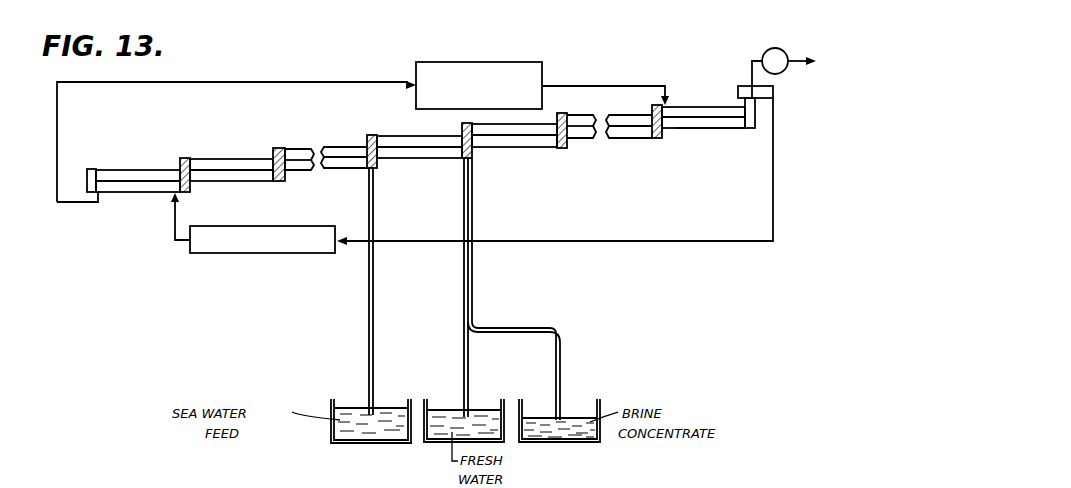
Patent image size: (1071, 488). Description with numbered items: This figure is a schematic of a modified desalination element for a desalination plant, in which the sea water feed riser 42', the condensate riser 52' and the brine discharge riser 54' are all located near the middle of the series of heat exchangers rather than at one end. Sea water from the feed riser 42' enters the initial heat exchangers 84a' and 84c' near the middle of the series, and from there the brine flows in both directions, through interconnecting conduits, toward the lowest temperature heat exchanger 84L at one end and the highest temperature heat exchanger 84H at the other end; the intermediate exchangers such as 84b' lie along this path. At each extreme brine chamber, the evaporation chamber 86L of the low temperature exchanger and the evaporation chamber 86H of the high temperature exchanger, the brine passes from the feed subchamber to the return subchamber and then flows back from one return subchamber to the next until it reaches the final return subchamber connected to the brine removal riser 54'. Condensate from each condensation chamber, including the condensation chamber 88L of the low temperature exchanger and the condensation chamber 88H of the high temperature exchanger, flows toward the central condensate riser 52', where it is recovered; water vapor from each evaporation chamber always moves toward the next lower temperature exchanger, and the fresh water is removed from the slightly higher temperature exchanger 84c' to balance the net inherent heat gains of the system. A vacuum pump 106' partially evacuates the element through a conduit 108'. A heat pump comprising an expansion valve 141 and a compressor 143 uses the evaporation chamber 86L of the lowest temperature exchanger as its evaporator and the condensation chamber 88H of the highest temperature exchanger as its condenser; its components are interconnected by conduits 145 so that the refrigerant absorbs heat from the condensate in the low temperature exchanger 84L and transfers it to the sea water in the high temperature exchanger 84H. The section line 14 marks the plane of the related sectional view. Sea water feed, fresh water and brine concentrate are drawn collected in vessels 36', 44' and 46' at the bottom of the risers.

The conduits 145 is at (298, 58).
The expansion valve 141 is at (472, 62).
The compressor 143 is at (215, 253).
The vacuum pump 106' is at (759, 57).
The conduit 108' is at (779, 107).
The condenser 88H is at (123, 189).
The highest temperature heat exchanger 84H is at (160, 193).
The evaporation chamber of the high temperature heat exchanger 86H is at (148, 152).
The initial heat exchanger 84c' is at (340, 171).
The initial heat exchanger 84a' is at (424, 158).
The stage b tube 84b' is at (534, 153).
The lowest temperature heat exchanger 84L is at (733, 126).
The evaporator 86L is at (718, 107).
The condensation chamber of the low temperature heat exchanger 88L is at (708, 121).
The section line 14 is at (548, 155).
The sea water feed riser 42' is at (347, 291).
The condensate riser 52' is at (445, 287).
The brine discharge riser 54' is at (536, 289).
The sea water feed tank 36' is at (354, 433).
The fresh water tank 44' is at (448, 435).
The brine concentrate tank 46' is at (567, 435).